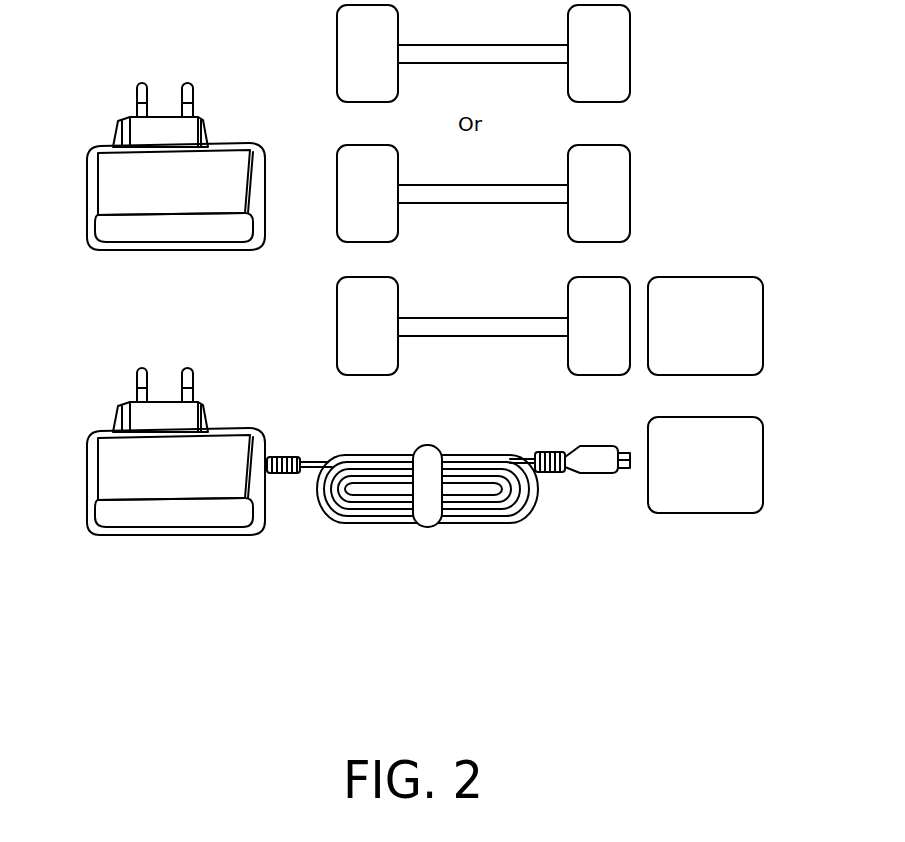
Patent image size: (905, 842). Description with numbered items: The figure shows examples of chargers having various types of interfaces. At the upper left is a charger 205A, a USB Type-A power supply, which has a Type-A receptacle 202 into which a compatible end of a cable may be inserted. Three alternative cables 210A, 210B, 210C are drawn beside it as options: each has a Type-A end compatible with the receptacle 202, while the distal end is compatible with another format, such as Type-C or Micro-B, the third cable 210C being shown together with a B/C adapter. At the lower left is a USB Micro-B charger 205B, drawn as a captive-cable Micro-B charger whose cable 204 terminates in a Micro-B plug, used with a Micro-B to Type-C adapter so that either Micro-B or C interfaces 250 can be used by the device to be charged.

The Type-A receptacle 202 is at (267, 183).
The captive cable Micro-B charger 204 is at (277, 457).
The charger 205A is at (83, 188).
The USB Micro-B charger 205B is at (88, 473).
The USB A to USB C cable 210A is at (630, 47).
The USB A to USB C cable 210B is at (630, 187).
The USB A to Micro-B cable with B/C adapter 210C is at (623, 277).
The Micro-B or C interfaces 250 is at (765, 455).